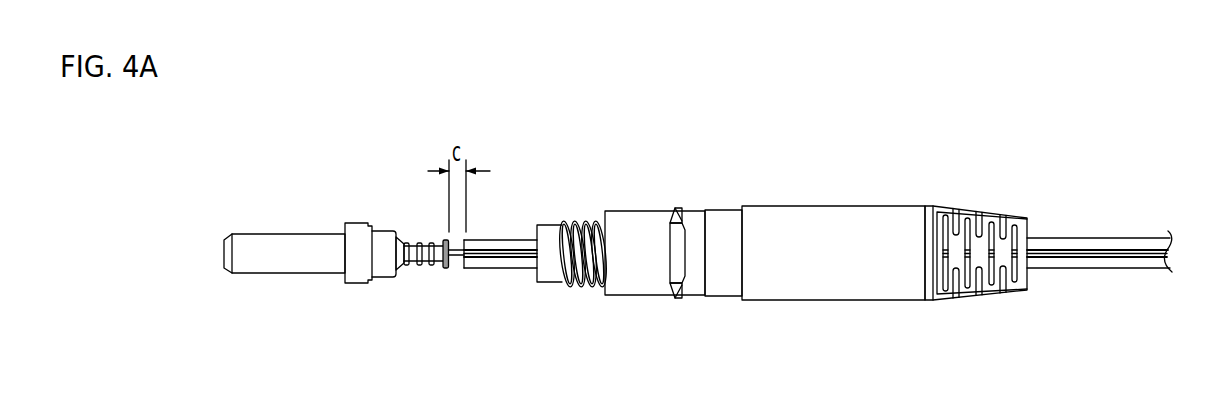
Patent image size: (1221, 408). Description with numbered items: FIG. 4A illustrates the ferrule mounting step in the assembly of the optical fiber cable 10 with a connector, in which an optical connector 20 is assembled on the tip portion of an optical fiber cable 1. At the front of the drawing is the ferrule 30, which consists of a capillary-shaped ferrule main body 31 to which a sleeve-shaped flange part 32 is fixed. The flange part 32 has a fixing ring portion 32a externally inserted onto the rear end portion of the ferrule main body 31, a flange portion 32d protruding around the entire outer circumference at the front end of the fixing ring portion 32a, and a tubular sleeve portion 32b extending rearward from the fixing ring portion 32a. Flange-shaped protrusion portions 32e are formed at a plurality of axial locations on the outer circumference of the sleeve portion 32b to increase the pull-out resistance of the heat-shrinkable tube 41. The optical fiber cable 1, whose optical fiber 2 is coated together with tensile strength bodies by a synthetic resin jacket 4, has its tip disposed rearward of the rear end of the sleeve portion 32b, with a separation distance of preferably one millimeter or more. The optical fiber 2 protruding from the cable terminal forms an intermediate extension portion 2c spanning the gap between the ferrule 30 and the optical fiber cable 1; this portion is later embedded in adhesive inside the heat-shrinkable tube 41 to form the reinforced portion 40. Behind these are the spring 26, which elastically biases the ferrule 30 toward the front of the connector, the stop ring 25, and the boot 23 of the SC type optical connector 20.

The ferrule 30 is at (351, 200).
The ferrule main body 31 is at (299, 233).
The flange part 32 is at (381, 229).
The flange portion 32d is at (352, 284).
The fixing ring portion 32a is at (380, 278).
The protrusion portion 32e is at (408, 238).
The sleeve portion 32b is at (427, 266).
The intermediate extension portion 2c is at (458, 258).
The optical fiber 2 is at (504, 312).
The heat-shrinkable tube 41 is at (559, 224).
The reinforced portion 40 is at (621, 270).
The spring 26 is at (584, 287).
The stop ring 25 is at (719, 209).
The boot 23 is at (913, 205).
The optical connector 20 is at (873, 157).
The optical fiber cable with a connector 10 is at (782, 219).
The jacket 4 is at (1084, 237).
The optical fiber cable 1 is at (1099, 219).